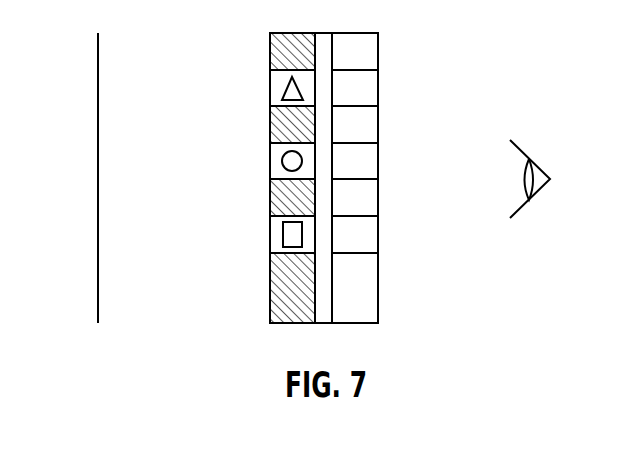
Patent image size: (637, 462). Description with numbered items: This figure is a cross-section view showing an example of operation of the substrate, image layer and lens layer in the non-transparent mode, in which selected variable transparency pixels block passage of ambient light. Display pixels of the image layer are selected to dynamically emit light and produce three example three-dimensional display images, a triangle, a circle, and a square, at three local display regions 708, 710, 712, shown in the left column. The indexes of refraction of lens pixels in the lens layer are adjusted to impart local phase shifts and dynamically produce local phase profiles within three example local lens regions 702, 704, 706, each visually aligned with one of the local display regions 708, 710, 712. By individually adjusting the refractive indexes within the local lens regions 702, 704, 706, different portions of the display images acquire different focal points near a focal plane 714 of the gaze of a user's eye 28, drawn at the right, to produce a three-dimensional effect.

The local lens region 702 is at (365, 85).
The local lens region 704 is at (365, 165).
The local lens region 706 is at (365, 235).
The local display region 708 is at (277, 87).
The local display region 710 is at (277, 160).
The local display region 712 is at (277, 233).
The focal plane 714 is at (98, 145).
The eye of viewer 28 is at (538, 163).